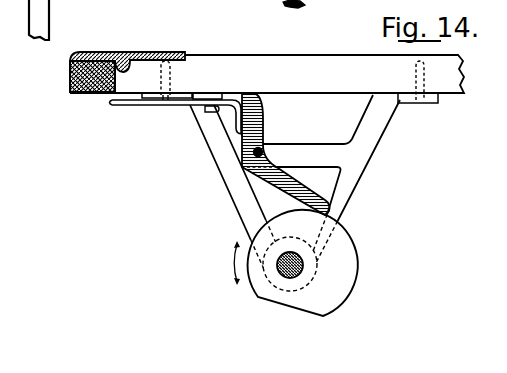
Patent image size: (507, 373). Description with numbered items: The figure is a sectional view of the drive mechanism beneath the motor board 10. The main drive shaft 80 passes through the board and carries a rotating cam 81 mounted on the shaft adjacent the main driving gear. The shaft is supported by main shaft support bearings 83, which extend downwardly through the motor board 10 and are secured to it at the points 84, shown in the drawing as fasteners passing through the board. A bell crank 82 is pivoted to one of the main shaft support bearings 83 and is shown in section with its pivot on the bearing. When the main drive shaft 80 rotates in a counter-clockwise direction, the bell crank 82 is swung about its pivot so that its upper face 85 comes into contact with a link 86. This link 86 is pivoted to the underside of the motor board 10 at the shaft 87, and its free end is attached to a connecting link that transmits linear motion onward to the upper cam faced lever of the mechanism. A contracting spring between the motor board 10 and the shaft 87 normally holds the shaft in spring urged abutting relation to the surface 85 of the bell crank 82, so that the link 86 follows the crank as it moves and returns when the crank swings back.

The motor board 10 is at (70, 88).
The main drive shaft 80 is at (287, 270).
The rotating cam 81 is at (341, 241).
The bell crank 82 is at (263, 131).
The main shaft support bearings 83 is at (368, 155).
The securing points 84 is at (173, 94).
The upper face 85 is at (243, 136).
The link 86 is at (126, 106).
The pivot shaft 87 is at (209, 108).